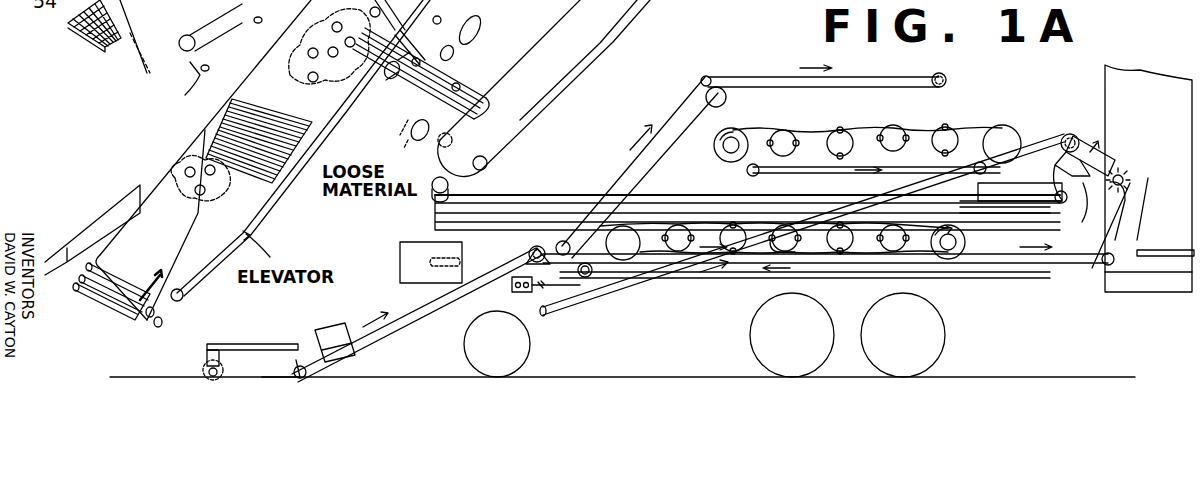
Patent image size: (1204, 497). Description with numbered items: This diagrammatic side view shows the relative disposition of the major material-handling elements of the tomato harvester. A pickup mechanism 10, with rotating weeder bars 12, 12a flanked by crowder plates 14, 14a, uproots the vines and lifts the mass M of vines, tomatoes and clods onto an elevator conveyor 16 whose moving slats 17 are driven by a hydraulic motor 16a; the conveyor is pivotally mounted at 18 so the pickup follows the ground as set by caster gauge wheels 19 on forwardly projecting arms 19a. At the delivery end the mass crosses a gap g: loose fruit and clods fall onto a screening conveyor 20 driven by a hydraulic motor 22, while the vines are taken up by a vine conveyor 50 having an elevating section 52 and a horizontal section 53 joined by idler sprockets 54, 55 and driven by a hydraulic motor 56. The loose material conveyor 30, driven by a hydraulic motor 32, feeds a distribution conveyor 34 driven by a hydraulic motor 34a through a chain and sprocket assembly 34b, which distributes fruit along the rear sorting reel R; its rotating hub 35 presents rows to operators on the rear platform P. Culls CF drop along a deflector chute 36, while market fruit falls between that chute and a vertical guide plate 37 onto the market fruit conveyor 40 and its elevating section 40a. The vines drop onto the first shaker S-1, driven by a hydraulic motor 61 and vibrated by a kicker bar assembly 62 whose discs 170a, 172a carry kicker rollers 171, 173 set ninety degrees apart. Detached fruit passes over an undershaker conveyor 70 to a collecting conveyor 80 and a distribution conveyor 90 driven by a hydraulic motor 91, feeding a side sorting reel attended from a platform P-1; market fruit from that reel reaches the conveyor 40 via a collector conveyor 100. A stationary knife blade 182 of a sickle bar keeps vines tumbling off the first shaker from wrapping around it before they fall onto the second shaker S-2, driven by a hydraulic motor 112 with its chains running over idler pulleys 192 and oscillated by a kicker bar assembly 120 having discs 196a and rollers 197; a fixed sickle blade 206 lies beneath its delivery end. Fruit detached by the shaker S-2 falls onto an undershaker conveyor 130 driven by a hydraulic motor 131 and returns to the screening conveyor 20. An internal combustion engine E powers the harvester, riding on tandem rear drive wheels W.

The pickup mechanism 10 is at (60, 234).
The weeder bar 12 is at (88, 286).
The weeder bar 12a is at (130, 296).
The crowder plate 14 is at (125, 197).
The crowder plate 14a is at (192, 270).
The elevator conveyor 16 is at (323, 191).
The hydraulic motor 16a is at (404, 91).
The moving slats 17 is at (235, 99).
The pivot mounting 18 is at (407, 38).
The front caster gauge wheel 19 is at (205, 364).
The forwardly projecting arm 19a is at (248, 343).
The screening conveyor 20 is at (487, 83).
The hydraulic motor 22 is at (412, 135).
The loose material conveyor 30 is at (630, 294).
The hydraulic motor 32 is at (1076, 140).
The distribution conveyor 34 is at (1114, 160).
The hydraulic motor 34a is at (1076, 198).
The chain and sprocket assembly 34b is at (1050, 138).
The rotating hub 35 is at (1128, 180).
The deflector chute 36 is at (1112, 217).
The vertical guide plate 37 is at (1148, 196).
The market fruit conveyor 40 is at (1178, 297).
The elevating section 40a is at (1148, 78).
The vine conveyor 50 is at (854, 108).
The elevating section 52 is at (672, 113).
The horizontal section 53 is at (865, 77).
The idler sprocket 54 is at (710, 77).
The idler sprocket 55 is at (730, 92).
The hydraulic motor 56 is at (948, 78).
The hydraulic motor 61 is at (723, 147).
The kicker bar assembly 62 is at (827, 123).
The undershaker conveyor 70 is at (774, 234).
The collecting conveyor 80 is at (1010, 192).
The distribution conveyor 90 is at (517, 190).
The hydraulic motor 91 is at (432, 198).
The collector conveyor 100 is at (153, 44).
The hydraulic motor 112 is at (957, 243).
The kicker bar assembly 120 is at (892, 254).
The undershaker conveyor 130 is at (730, 286).
The hydraulic motor 131 is at (458, 53).
The rotating disc 170a is at (858, 124).
The kicker roller 171 is at (840, 153).
The disc 172a is at (785, 130).
The kicker roller 173 is at (815, 155).
The stationary knife blade 182 is at (745, 170).
The idler pulley 192 is at (497, 30).
The disc 196a is at (678, 225).
The roller 197 is at (801, 255).
The fixed blade 206 is at (944, 275).
The culls CF is at (205, 68).
The internal combustion engine E is at (398, 238).
The mass M is at (287, 62).
The rear platform P is at (1155, 250).
The platform P-1 is at (66, 24).
The rear sorting reel R is at (1133, 179).
The first shaker conveyor S-1 is at (1016, 128).
The second stage shaker S-2 is at (982, 234).
The rear drive wheels W is at (515, 355).
The gap g is at (573, 246).